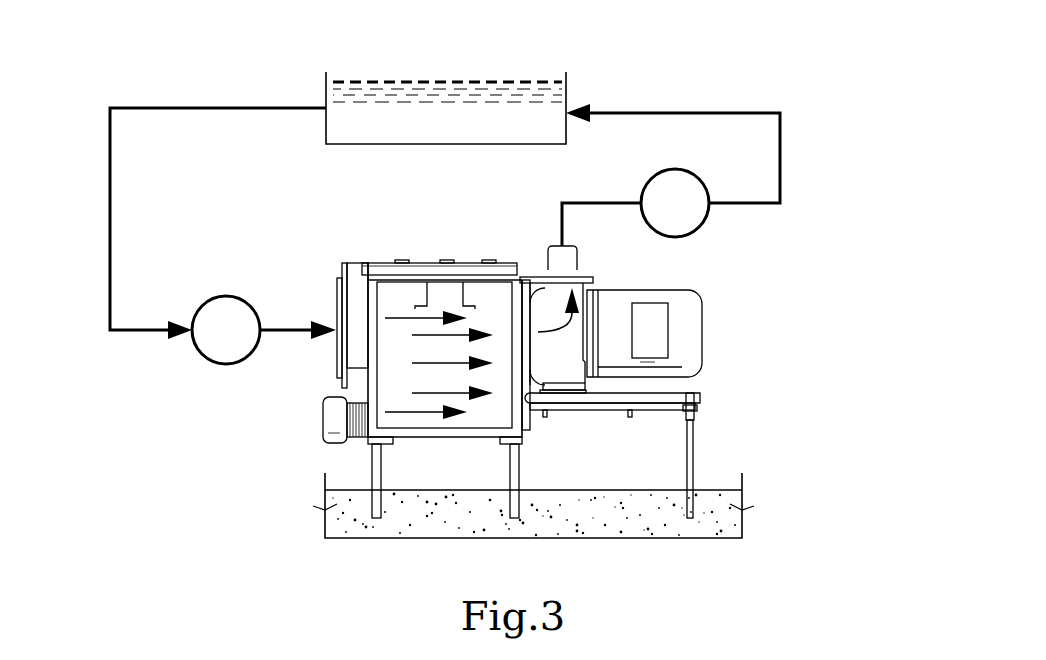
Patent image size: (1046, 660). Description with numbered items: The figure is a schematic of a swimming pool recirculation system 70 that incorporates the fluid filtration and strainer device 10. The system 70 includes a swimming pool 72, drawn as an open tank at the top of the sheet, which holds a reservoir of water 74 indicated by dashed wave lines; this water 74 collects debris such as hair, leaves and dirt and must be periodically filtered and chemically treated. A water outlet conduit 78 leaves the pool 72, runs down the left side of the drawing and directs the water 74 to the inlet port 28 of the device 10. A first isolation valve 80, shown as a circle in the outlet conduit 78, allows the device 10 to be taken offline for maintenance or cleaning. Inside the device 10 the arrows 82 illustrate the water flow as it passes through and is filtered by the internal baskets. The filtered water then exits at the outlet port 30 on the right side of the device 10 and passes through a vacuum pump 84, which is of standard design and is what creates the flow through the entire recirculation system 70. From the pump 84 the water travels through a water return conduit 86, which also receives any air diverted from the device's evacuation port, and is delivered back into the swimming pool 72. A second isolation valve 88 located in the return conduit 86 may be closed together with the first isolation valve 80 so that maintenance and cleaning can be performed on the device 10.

The fluid filtration and strainer device 10 is at (446, 245).
The inlet port 28 is at (352, 262).
The outlet port 30 is at (526, 270).
The swimming pool recirculation system 70 is at (250, 393).
The swimming pool 72 is at (522, 66).
The water 74 is at (412, 115).
The water outlet conduit 78 is at (215, 108).
The first isolation valve 80 is at (218, 318).
The arrows 82 is at (427, 365).
The vacuum pump 84 is at (668, 282).
The water return conduit 86 is at (572, 248).
The second isolation valve 88 is at (672, 183).